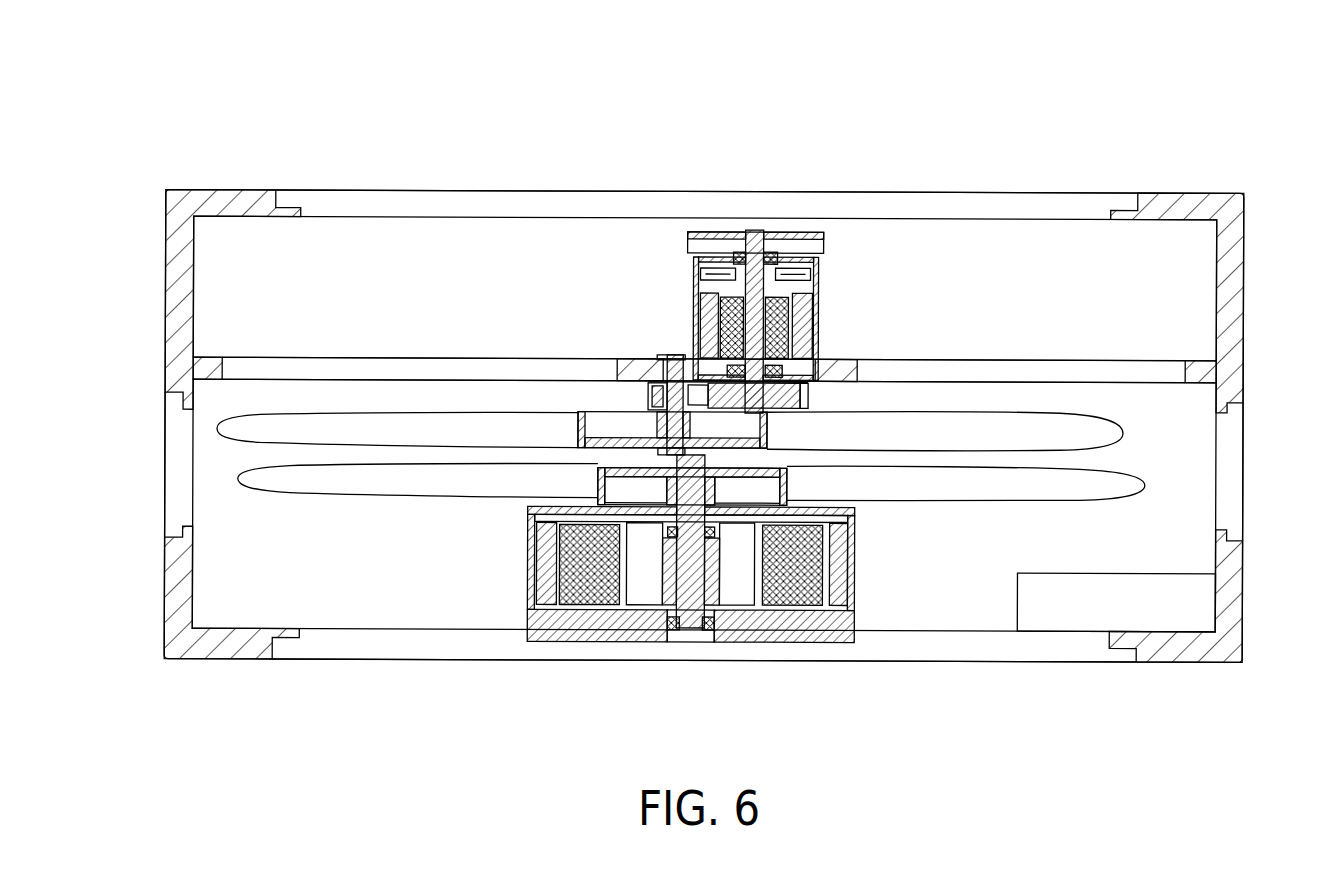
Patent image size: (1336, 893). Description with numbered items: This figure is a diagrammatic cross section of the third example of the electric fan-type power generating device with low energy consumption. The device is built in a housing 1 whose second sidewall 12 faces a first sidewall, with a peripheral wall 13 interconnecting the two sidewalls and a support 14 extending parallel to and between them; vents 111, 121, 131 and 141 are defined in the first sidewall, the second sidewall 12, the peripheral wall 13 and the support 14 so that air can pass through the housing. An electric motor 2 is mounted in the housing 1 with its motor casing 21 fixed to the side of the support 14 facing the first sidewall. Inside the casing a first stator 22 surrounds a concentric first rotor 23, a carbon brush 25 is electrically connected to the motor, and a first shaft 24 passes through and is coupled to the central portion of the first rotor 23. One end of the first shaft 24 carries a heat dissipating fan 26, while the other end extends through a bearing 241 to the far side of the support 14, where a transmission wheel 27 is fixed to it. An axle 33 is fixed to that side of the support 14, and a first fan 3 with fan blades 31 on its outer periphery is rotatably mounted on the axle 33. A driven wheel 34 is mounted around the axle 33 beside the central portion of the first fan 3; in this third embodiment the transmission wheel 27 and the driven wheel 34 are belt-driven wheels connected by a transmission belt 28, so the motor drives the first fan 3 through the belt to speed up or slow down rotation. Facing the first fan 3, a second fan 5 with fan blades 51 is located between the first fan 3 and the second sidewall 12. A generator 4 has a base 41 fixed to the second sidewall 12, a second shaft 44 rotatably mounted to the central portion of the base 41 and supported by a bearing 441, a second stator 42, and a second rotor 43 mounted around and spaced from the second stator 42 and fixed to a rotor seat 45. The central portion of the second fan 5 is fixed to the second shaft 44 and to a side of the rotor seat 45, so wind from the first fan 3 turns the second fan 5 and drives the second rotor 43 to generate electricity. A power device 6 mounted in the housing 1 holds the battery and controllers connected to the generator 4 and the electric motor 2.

The housing 1 is at (1215, 188).
The vent 111 is at (487, 212).
The second sidewall 12 is at (627, 642).
The vent 121 is at (430, 645).
The peripheral wall 13 is at (1245, 262).
The vent 131 is at (168, 472).
The support 14 is at (617, 370).
The vent 141 is at (393, 367).
The electric motor 2 is at (684, 268).
The motor casing 21 is at (698, 296).
The first stator 22 is at (800, 308).
The first rotor 23 is at (722, 320).
The first shaft 24 is at (755, 232).
The bearing 241 is at (815, 342).
The carbon brush 25 is at (793, 277).
The heat dissipating fan 26 is at (805, 232).
The transmission wheel 27 is at (917, 411).
The transmission belt 28 is at (806, 397).
The first fan 3 is at (318, 430).
The fan blades 31 is at (1060, 430).
The axle 33 is at (665, 355).
The driven wheel 34 is at (648, 397).
The generator 4 is at (866, 555).
The base 41 is at (792, 622).
The second stator 42 is at (578, 602).
The second rotor 43 is at (545, 570).
The second shaft 44 is at (690, 600).
The bearing 441 is at (712, 628).
The rotor seat 45 is at (540, 540).
The second fan 5 is at (342, 506).
The fan blades 51 is at (1005, 488).
The power device 6 is at (1067, 605).